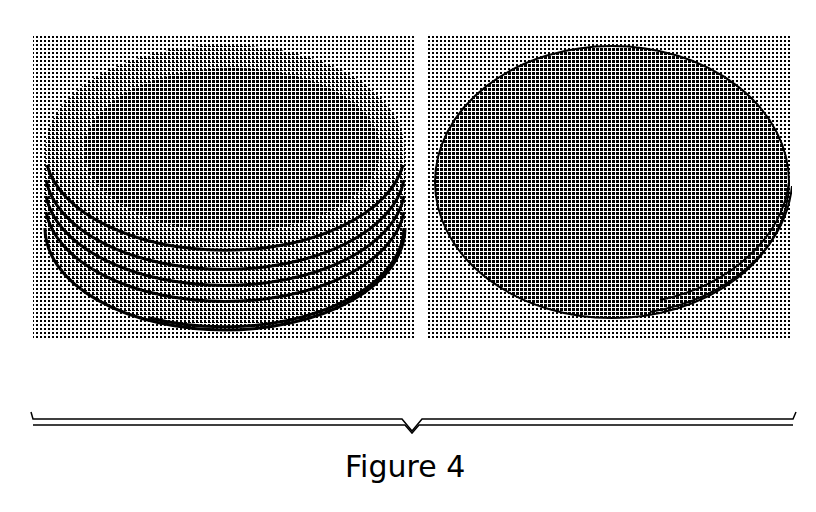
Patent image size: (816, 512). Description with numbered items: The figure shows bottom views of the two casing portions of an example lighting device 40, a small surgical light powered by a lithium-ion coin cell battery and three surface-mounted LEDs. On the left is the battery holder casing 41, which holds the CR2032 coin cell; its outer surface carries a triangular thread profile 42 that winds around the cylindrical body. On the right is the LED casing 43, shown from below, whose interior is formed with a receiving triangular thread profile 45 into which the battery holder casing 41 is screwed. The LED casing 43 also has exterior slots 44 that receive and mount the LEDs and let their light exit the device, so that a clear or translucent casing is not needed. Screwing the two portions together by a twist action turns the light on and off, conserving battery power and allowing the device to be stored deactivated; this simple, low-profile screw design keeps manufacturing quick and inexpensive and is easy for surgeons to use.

The lighting device 40 is at (99, 407).
The battery holder casing 41 is at (216, 190).
The triangular thread profile 42 is at (293, 295).
The LED casing 43 is at (519, 260).
The exterior slots 44 is at (605, 217).
The receiving triangular thread profile 45 is at (691, 112).